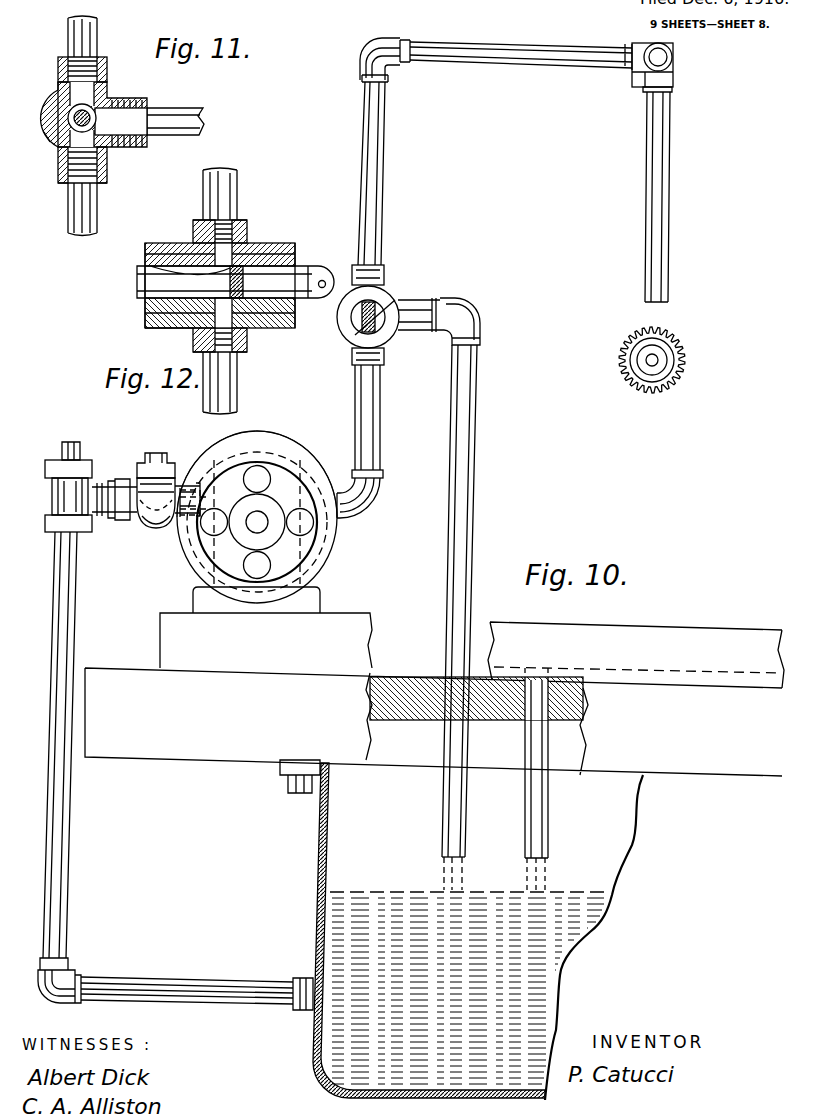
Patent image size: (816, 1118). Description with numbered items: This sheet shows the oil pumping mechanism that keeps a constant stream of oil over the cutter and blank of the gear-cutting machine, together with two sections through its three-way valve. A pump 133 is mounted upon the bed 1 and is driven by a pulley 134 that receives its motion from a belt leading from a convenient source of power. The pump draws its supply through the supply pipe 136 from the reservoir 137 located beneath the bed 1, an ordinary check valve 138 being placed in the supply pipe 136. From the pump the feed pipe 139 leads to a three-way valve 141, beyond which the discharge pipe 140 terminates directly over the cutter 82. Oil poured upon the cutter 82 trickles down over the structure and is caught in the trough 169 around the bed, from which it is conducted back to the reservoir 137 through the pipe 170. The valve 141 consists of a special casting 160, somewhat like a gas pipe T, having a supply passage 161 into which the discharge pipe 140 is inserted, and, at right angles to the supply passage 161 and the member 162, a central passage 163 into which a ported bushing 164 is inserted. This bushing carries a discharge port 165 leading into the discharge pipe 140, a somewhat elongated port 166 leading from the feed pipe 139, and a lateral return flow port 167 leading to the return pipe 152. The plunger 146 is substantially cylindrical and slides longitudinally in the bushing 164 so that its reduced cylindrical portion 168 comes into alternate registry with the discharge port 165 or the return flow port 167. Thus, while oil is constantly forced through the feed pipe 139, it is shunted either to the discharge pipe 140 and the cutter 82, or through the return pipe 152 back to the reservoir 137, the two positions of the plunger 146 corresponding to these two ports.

In FIG. 10, the bed 1 is at (433, 730).
In FIG. 10, the cutter 82 is at (632, 386).
In FIG. 10, the pump 133 is at (275, 444).
In FIG. 10, the pulley 134 is at (318, 562).
In FIG. 10, the supply pipe 136 is at (68, 856).
In FIG. 10, the reservoir 137 is at (316, 874).
In FIG. 10, the check valve 138 is at (148, 528).
In FIG. 11, the feed pipe 139 is at (98, 208).
In FIG. 12, the feed pipe 139 is at (236, 396).
In FIG. 10, the feed pipe 139 is at (380, 436).
In FIG. 11, the discharge pipe 140 is at (98, 40).
In FIG. 12, the discharge pipe 140 is at (238, 186).
In FIG. 10, the discharge pipe 140 is at (384, 170).
In FIG. 10, the three-way valve 141 is at (346, 340).
In FIG. 12, the valve plunger 146 is at (316, 266).
In FIG. 10, the valve plunger 146 is at (378, 310).
In FIG. 11, the return pipe 152 is at (195, 113).
In FIG. 10, the return pipe 152 is at (478, 420).
In FIG. 12, the casting 160 is at (247, 232).
In FIG. 11, the supply passage 161 is at (60, 174).
In FIG. 12, the supply passage 161 is at (247, 340).
In FIG. 11, the member 162 is at (107, 80).
In FIG. 12, the member 162 is at (193, 230).
In FIG. 12, the passage 163 is at (170, 328).
In FIG. 11, the ported bushing 164 is at (50, 144).
In FIG. 12, the ported bushing 164 is at (145, 296).
In FIG. 12, the discharge port 165 is at (160, 276).
In FIG. 12, the elongated port 166 is at (227, 288).
In FIG. 11, the return flow port 167 is at (108, 112).
In FIG. 12, the return flow port 167 is at (262, 252).
In FIG. 12, the reduced cylindrical portion 168 is at (312, 296).
In FIG. 10, the trough 169 is at (636, 655).
In FIG. 10, the pipe 170 is at (548, 830).